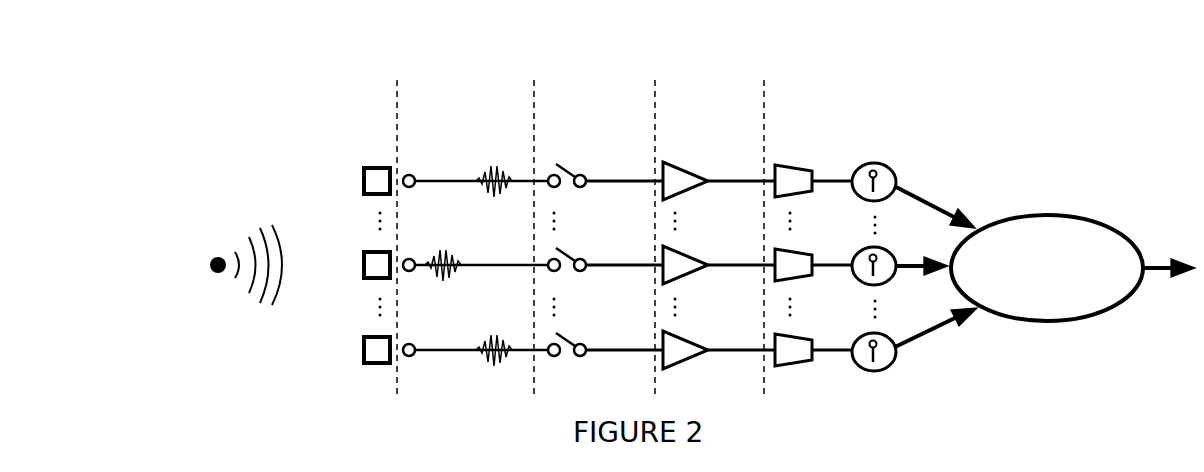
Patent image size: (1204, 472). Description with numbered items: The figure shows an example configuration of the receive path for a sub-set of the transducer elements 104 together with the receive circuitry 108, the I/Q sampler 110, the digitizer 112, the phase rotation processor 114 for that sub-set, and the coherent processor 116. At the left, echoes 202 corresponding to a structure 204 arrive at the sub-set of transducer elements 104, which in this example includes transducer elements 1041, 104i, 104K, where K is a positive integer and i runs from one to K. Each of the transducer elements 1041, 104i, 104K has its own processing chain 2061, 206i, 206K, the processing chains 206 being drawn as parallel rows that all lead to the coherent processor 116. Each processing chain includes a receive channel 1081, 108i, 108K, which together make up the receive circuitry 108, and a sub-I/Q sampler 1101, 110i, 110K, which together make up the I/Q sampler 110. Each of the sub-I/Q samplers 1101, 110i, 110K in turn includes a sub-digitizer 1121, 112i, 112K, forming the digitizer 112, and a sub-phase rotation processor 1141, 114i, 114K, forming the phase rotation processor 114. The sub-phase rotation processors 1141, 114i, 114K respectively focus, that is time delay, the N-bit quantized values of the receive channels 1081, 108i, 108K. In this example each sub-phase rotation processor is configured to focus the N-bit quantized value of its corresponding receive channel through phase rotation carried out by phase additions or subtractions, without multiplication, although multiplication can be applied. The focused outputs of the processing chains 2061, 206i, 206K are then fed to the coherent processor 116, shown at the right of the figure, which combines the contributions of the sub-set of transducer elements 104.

The echoes 202 is at (235, 328).
The structure 204 is at (212, 248).
The transducer elements 104 is at (338, 244).
The transducer element 1041 is at (362, 180).
The transducer element 104i is at (362, 264).
The transducer element 104K is at (362, 346).
The receive circuitry 108 is at (470, 219).
The receive channel 1081 is at (433, 161).
The receive channel 108i is at (435, 237).
The receive channel 108K is at (433, 371).
The I/Q sampler 110 is at (595, 219).
The sub-I/Q sampler 1101 is at (593, 161).
The sub-I/Q sampler 110i is at (593, 238).
The sub-I/Q sampler 110K is at (593, 371).
The digitizer 112 is at (712, 221).
The sub-digitizer 1121 is at (701, 160).
The sub-digitizer 112i is at (703, 238).
The sub-digitizer 112K is at (701, 377).
The phase rotation processor 114 is at (878, 240).
The sub-phase rotation processor 1141 is at (821, 156).
The sub-phase rotation processor 114i is at (825, 236).
The sub-phase rotation processor 114K is at (819, 386).
The processing chains 206 is at (969, 246).
The processing chain 2061 is at (981, 128).
The processing chain 206i is at (897, 296).
The processing chain 206K is at (919, 367).
The coherent processor 116 is at (1073, 218).